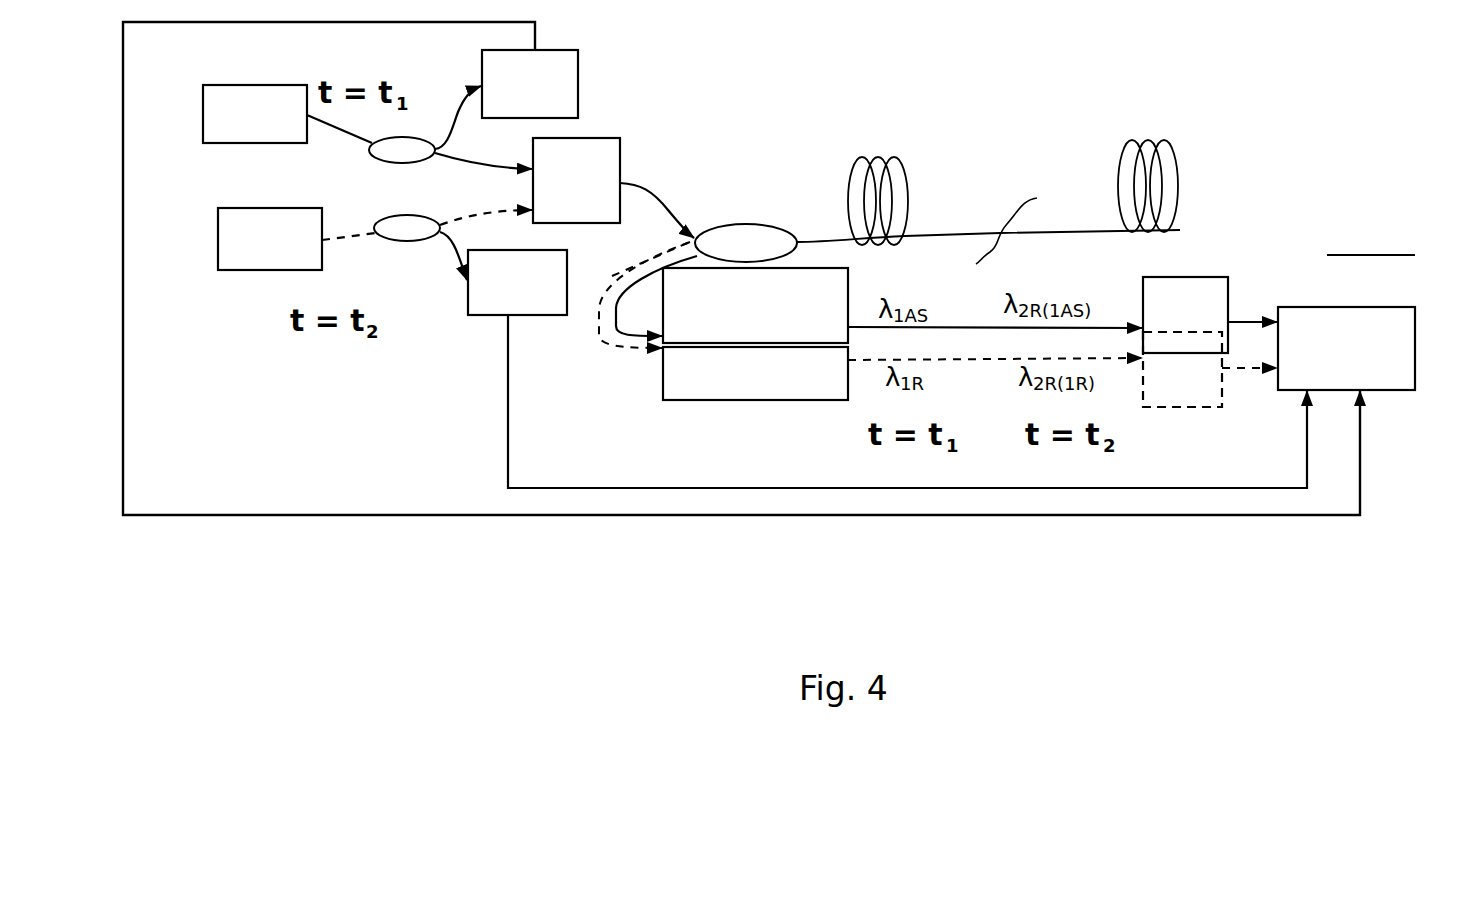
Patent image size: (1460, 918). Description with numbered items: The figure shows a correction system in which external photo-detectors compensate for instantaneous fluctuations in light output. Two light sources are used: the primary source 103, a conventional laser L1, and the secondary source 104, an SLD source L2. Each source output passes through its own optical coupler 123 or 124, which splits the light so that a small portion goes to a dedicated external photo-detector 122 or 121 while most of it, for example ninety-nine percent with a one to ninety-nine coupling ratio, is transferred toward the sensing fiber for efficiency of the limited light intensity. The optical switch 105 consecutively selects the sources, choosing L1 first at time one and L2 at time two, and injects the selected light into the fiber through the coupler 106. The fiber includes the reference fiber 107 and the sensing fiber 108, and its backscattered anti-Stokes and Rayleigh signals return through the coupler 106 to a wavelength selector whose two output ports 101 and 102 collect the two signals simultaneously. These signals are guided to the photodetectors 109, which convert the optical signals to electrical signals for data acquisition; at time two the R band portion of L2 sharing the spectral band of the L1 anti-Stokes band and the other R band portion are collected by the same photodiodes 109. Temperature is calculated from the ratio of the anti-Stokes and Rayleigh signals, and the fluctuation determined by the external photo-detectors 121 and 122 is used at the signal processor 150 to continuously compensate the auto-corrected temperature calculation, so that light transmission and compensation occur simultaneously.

The first output port of the optical filter 101 is at (755, 305).
The second output port of the optical filter 102 is at (755, 373).
The primary light source 103 is at (255, 114).
The secondary light source 104 is at (270, 243).
The optical switch 105 is at (642, 173).
The coupler 106 is at (746, 228).
The reference fiber 107 is at (911, 178).
The sensing fiber 108 is at (1213, 171).
The photodetector 109 is at (1185, 364).
The external photo-detector 121 is at (506, 297).
The external photo-detector 122 is at (564, 84).
The optical coupler 123 is at (402, 170).
The optical coupler 124 is at (407, 250).
The signal processor 150 is at (1346, 304).